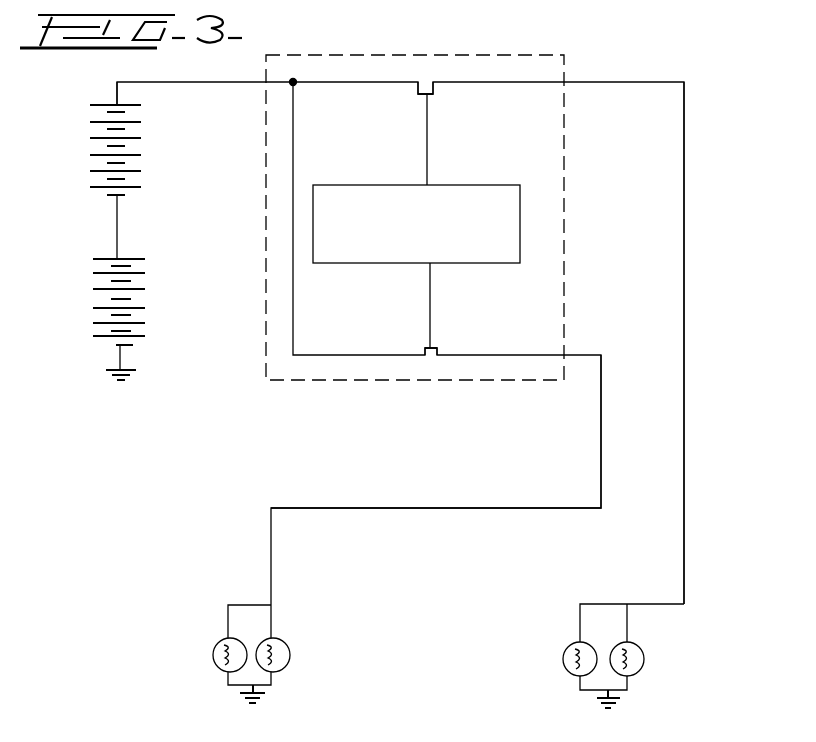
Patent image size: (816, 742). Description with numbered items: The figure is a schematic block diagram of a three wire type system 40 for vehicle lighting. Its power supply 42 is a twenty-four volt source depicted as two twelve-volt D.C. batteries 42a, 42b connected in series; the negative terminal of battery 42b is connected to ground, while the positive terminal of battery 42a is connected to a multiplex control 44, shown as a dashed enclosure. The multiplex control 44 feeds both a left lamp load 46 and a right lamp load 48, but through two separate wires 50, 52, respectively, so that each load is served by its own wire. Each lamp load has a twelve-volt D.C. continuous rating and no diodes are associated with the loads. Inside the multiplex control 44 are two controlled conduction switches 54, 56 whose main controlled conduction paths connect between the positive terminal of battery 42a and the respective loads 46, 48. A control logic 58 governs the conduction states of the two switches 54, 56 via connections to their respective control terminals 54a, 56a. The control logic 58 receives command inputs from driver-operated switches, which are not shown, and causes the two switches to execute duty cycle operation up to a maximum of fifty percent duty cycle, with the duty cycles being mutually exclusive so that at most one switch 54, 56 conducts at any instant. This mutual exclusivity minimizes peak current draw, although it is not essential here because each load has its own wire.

The three wire type system 40 is at (110, 537).
The power supply 42 is at (107, 231).
The battery 42a is at (90, 171).
The battery 42b is at (93, 308).
The multiplex control 44 is at (425, 56).
The left lamp load 46 is at (645, 657).
The right lamp load 48 is at (290, 653).
The wire 50 is at (685, 545).
The wire 52 is at (602, 472).
The controlled conduction switch 54 is at (434, 94).
The control terminal 54a is at (424, 94).
The controlled conduction switch 56 is at (438, 348).
The control terminal 56a is at (424, 348).
The control logic 58 is at (447, 185).